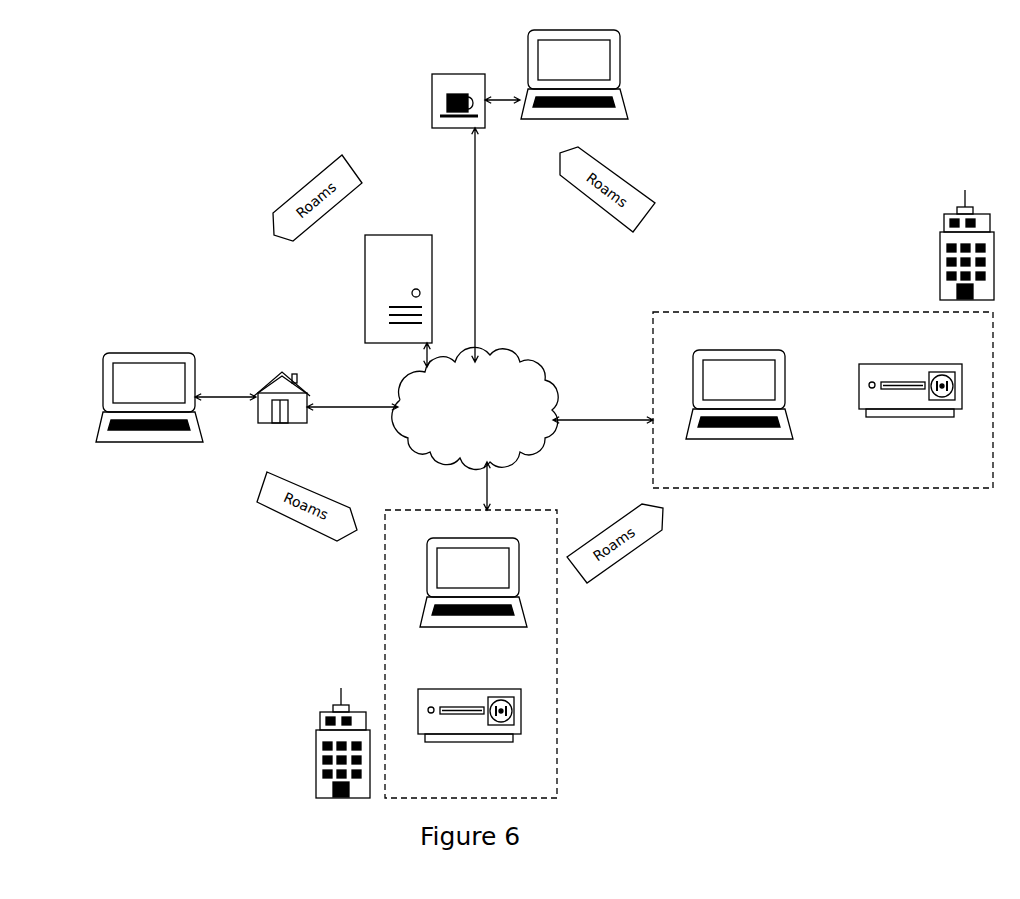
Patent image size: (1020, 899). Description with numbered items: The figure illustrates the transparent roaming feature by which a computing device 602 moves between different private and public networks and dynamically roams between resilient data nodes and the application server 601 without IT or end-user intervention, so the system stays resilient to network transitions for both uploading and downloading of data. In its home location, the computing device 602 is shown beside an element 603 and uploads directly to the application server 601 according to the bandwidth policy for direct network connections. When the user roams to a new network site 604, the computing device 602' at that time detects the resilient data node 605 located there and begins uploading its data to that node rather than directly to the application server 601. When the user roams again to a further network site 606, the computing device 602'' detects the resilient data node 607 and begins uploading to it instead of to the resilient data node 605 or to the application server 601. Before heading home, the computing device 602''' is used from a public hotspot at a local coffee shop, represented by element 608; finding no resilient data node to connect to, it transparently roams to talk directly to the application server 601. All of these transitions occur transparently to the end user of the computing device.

The application server 601 is at (365, 315).
The computing device 602 is at (115, 397).
The computing device 602' is at (473, 604).
The computing device 602'' is at (739, 416).
The computing device 602''' is at (609, 74).
The home network 603 is at (282, 372).
The network site 604 is at (557, 676).
The resilient data node 605 is at (482, 742).
The network site 606 is at (835, 488).
The resilient data node 607 is at (928, 420).
The coffee shop / public location 608 is at (432, 93).